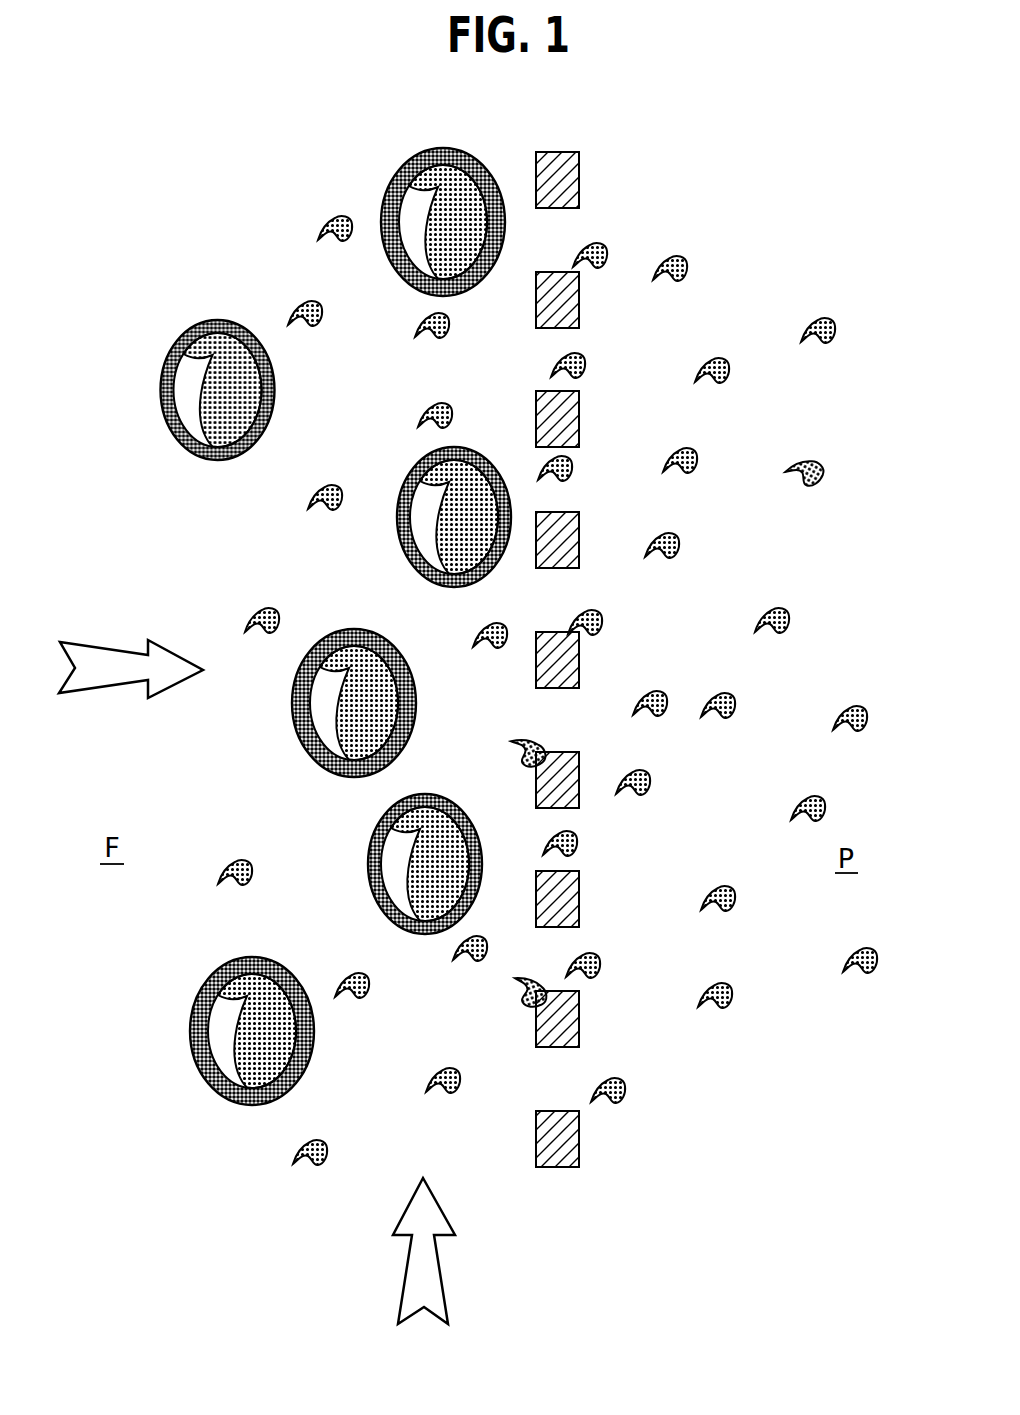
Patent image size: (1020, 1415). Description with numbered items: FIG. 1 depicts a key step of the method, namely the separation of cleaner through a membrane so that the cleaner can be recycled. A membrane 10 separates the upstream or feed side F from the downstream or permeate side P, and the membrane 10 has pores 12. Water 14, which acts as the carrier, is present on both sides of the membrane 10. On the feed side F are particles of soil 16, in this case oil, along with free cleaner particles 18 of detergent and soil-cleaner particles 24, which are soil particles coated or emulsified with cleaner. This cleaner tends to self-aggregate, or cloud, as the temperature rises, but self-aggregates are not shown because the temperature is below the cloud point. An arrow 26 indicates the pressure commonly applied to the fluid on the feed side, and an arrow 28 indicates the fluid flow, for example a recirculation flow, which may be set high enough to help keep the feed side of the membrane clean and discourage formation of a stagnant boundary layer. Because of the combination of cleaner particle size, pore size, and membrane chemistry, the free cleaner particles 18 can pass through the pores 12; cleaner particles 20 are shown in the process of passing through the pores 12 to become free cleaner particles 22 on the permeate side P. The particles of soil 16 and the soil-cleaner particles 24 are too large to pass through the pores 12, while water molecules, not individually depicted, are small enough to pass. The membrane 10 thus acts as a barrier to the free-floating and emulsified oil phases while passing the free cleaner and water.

The membrane 10 is at (580, 1137).
The pores 12 is at (540, 248).
The water 14 is at (843, 411).
The particles of soil 16 is at (213, 322).
The free cleaner particles 18 is at (310, 298).
The cleaner particles 20 is at (583, 360).
The free cleaner particles 22 is at (797, 484).
The soil-cleaner particles 24 is at (404, 165).
The arrow 26 is at (108, 687).
The arrow 28 is at (407, 1278).